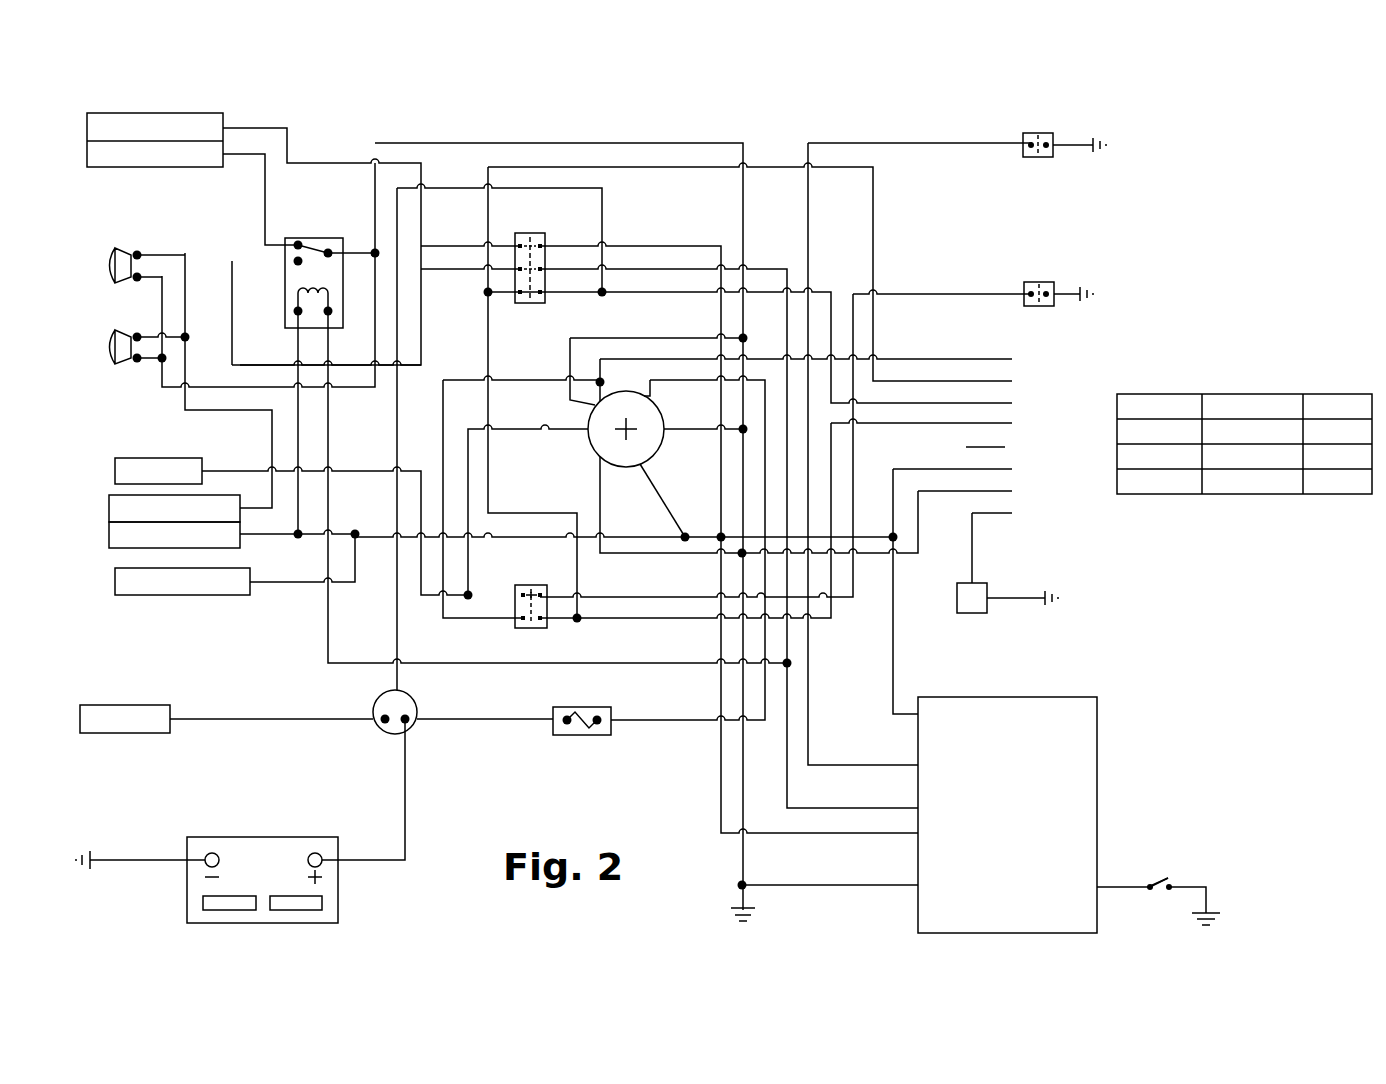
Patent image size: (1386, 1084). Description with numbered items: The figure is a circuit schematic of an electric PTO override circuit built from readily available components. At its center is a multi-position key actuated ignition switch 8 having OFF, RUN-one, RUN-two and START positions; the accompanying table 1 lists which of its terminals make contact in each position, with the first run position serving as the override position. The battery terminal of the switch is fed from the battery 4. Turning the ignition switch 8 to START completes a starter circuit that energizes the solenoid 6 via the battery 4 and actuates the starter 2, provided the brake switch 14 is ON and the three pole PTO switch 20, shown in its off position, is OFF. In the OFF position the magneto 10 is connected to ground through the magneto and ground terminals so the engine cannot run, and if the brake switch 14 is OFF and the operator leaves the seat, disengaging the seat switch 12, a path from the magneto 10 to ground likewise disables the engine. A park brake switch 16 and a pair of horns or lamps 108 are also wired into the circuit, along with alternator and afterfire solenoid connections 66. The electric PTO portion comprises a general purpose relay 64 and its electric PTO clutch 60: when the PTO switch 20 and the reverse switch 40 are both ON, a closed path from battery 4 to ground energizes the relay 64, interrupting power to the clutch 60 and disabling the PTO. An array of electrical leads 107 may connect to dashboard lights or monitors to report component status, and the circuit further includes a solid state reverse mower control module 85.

The table 1 is at (1220, 394).
The starter 2 is at (135, 705).
The battery 4 is at (270, 837).
The solenoid 6 is at (386, 728).
The ignition switch 8 is at (627, 390).
The magneto 10 is at (115, 471).
The seat switch 12 is at (1031, 307).
The brake switch 14 is at (515, 606).
The park brake switch 16 is at (1031, 158).
The PTO switch 20 is at (545, 240).
The reverse switch 40 is at (1160, 882).
The electric PTO clutch 60 is at (220, 113).
The relay 64 is at (316, 238).
The alternator 66 is at (109, 508).
The RMC module 85 is at (1065, 697).
The electrical leads 107 is at (1082, 417).
The headlights 108 is at (128, 311).